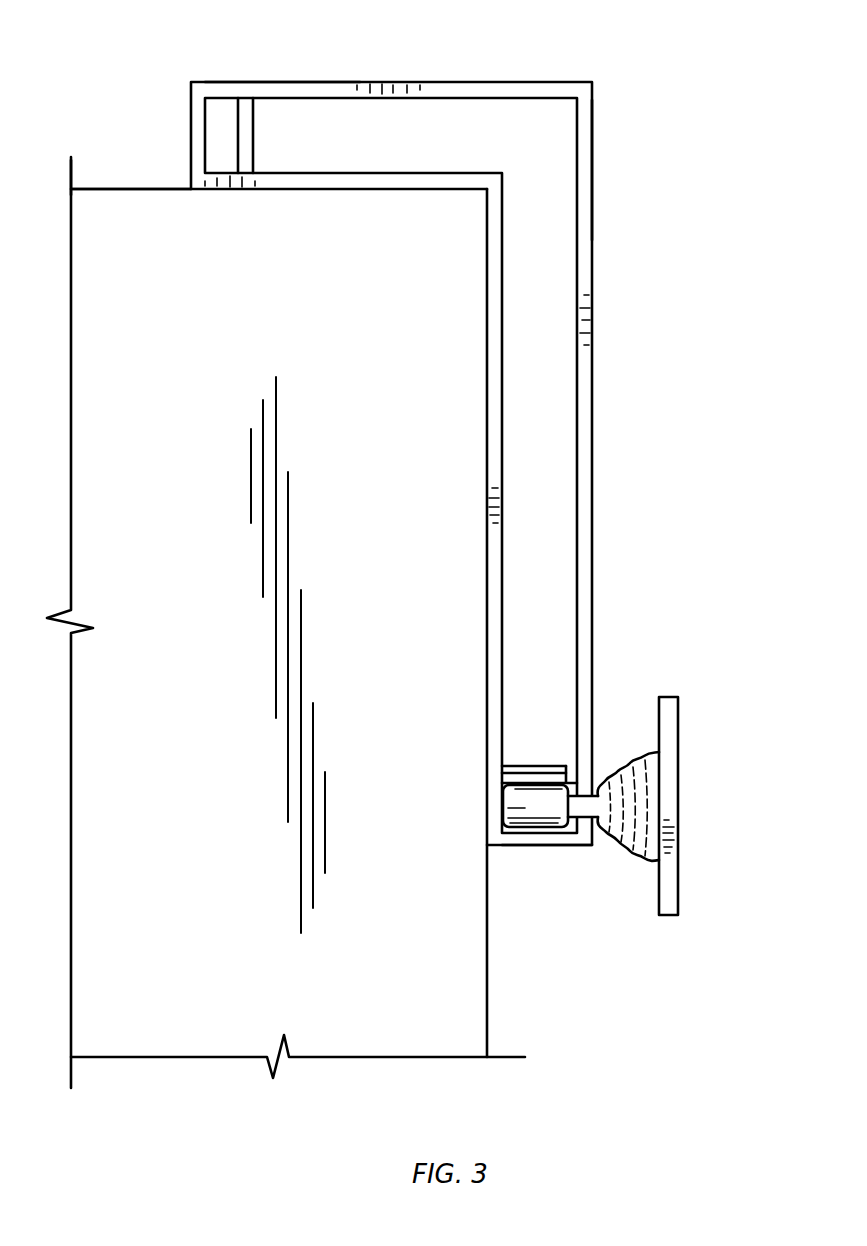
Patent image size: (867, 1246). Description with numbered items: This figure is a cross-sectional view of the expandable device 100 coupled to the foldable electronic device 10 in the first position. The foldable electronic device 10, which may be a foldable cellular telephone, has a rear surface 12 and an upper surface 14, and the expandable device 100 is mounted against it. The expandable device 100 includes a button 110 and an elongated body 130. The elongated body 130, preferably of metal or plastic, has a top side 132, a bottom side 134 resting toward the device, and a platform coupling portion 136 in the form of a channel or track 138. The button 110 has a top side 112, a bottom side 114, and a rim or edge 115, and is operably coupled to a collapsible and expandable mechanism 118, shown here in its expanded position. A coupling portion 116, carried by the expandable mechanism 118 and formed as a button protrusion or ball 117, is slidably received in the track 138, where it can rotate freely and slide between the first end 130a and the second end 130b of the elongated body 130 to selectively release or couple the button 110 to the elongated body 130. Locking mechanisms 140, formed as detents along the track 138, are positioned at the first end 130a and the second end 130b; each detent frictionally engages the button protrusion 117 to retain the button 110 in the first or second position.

The foldable electronic device 10 is at (303, 303).
The rear surface 12 is at (490, 1012).
The upper surface 14 is at (109, 187).
The expandable device 100 is at (618, 249).
The button 110 is at (668, 697).
The top side 112 is at (683, 732).
The bottom side 114 is at (655, 726).
The rim 115 is at (668, 915).
The coupling portion 116 is at (545, 802).
The button protrusion 117 is at (565, 773).
The expandable mechanism 118 is at (651, 842).
The elongated body 130 is at (530, 91).
The first end 130a is at (511, 855).
The second end 130b is at (230, 60).
The top side 132 is at (594, 169).
The bottom side 134 is at (243, 190).
The platform coupling portion 136 is at (536, 499).
The track 138 is at (567, 430).
The locking mechanism 140 is at (253, 138).